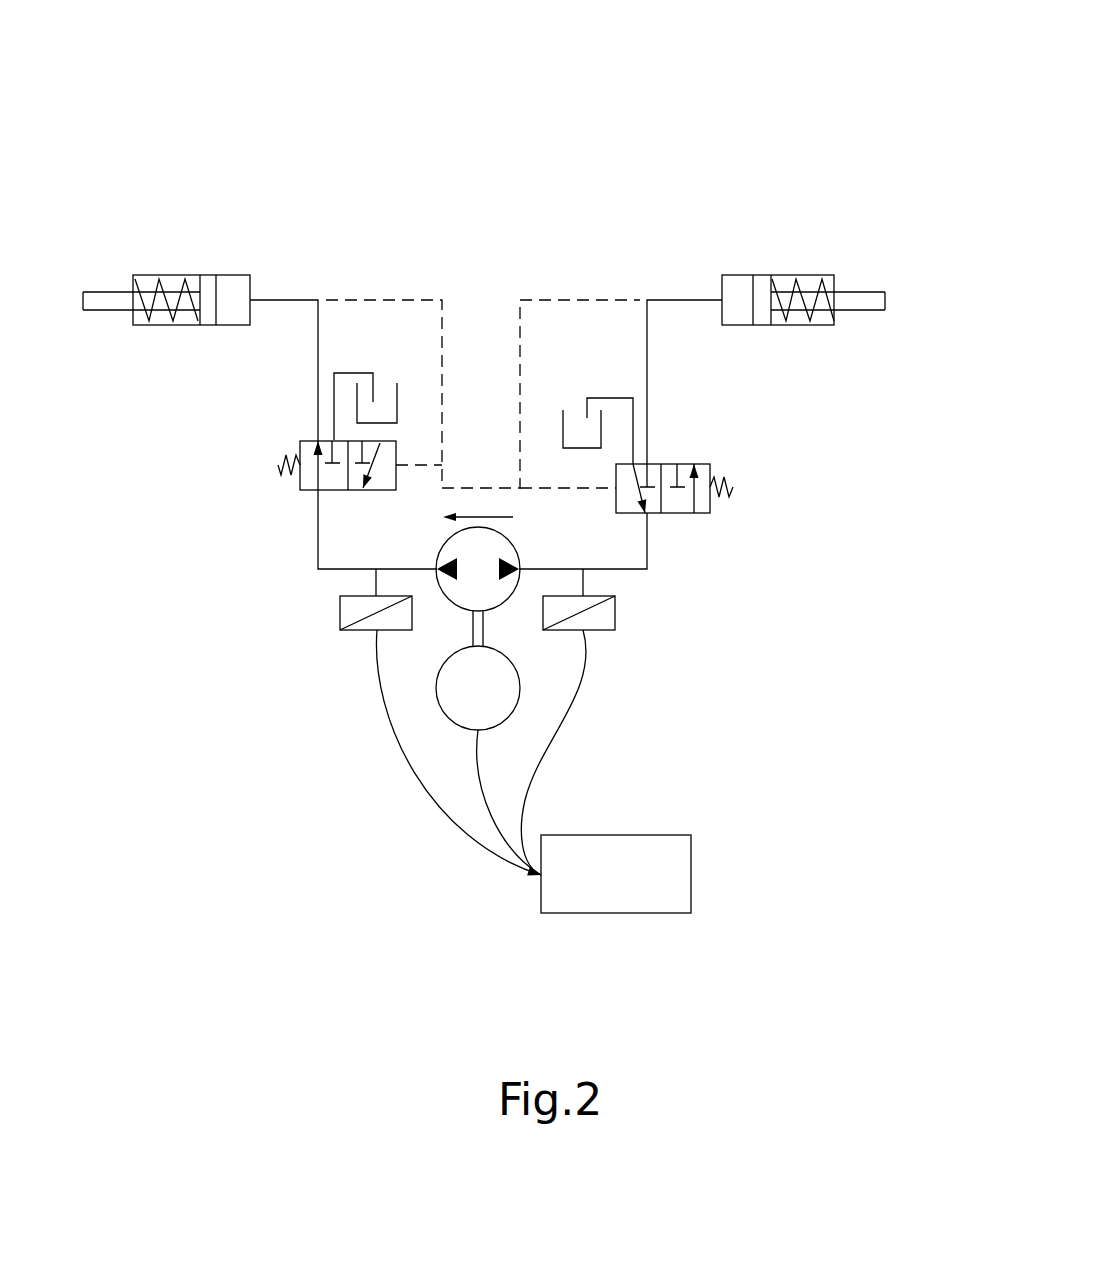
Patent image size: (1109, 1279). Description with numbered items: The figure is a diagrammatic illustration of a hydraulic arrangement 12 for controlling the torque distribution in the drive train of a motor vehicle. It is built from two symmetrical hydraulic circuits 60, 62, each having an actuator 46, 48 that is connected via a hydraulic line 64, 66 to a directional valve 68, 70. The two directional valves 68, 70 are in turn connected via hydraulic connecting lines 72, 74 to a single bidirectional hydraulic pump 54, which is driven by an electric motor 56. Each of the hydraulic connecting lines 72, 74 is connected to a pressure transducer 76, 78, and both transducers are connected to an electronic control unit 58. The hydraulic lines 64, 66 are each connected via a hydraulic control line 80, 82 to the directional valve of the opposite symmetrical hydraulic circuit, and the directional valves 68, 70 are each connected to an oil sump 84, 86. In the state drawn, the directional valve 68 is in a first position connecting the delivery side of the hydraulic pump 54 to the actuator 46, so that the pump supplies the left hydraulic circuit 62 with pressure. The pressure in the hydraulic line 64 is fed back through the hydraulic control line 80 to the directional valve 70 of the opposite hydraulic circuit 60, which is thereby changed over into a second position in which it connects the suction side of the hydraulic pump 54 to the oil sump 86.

The hydraulic arrangement 12 is at (623, 165).
The actuator 46 is at (176, 275).
The actuator 48 is at (777, 275).
The bidirectional hydraulic pump 54 is at (447, 601).
The electric motor 56 is at (447, 713).
The electronic control unit 58 is at (630, 913).
The hydraulic circuit 60 is at (706, 937).
The hydraulic circuit 62 is at (322, 900).
The hydraulic line 64 is at (318, 375).
The hydraulic line 66 is at (648, 377).
The directional valve 68 is at (317, 491).
The directional valve 70 is at (695, 514).
The hydraulic connecting line 72 is at (316, 558).
The hydraulic connecting line 74 is at (647, 569).
The pressure transducer 76 is at (338, 613).
The pressure transducer 78 is at (617, 617).
The hydraulic control line 80 is at (350, 302).
The hydraulic control line 82 is at (603, 303).
The oil sump 84 is at (357, 384).
The oil sump 86 is at (588, 428).